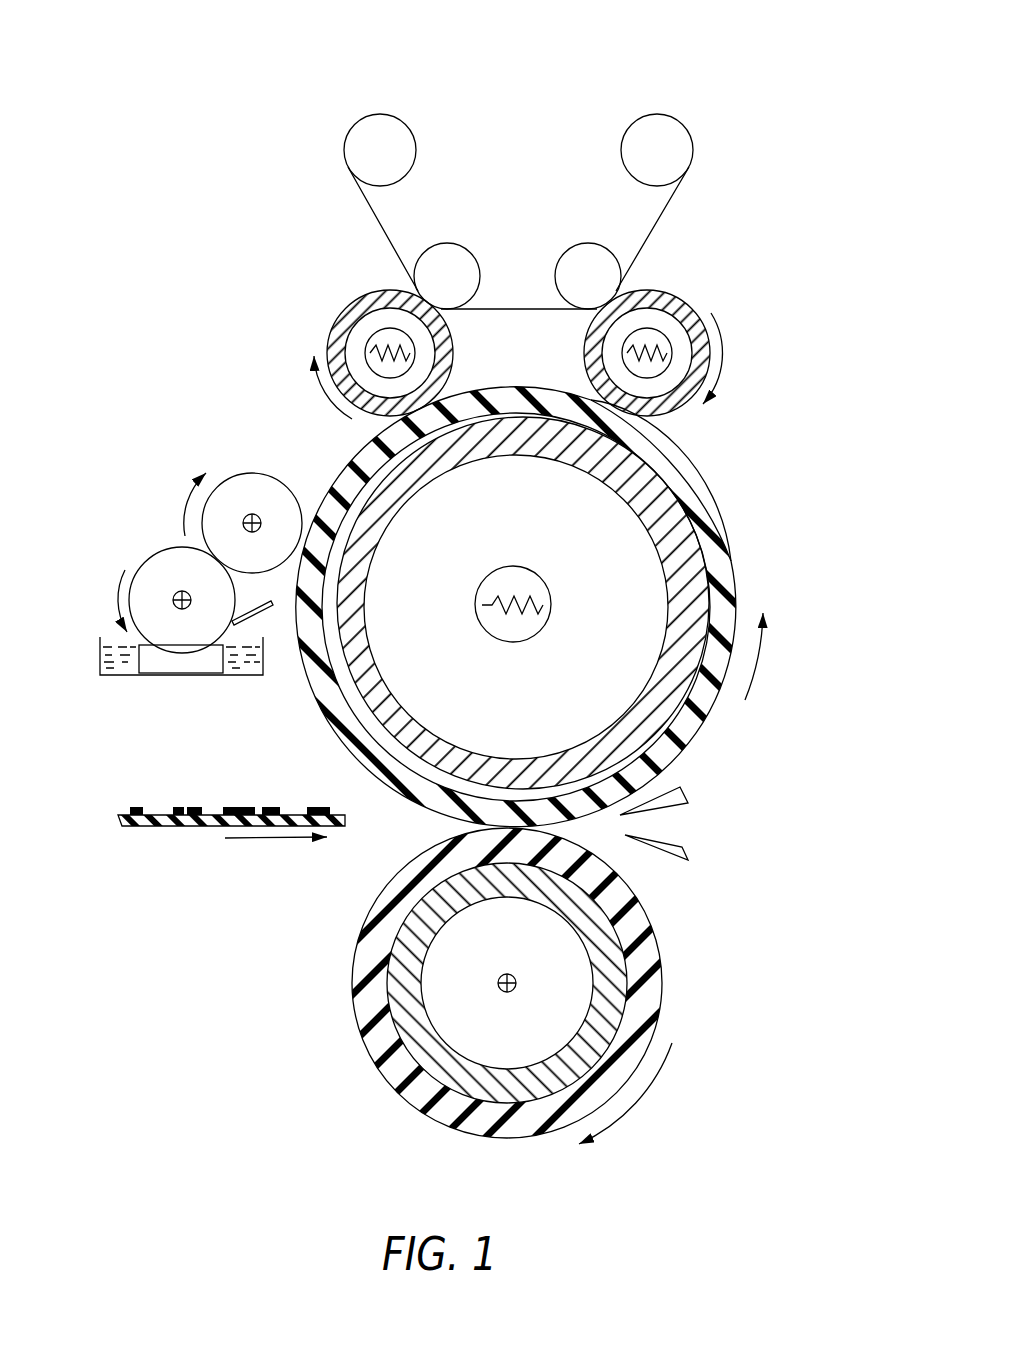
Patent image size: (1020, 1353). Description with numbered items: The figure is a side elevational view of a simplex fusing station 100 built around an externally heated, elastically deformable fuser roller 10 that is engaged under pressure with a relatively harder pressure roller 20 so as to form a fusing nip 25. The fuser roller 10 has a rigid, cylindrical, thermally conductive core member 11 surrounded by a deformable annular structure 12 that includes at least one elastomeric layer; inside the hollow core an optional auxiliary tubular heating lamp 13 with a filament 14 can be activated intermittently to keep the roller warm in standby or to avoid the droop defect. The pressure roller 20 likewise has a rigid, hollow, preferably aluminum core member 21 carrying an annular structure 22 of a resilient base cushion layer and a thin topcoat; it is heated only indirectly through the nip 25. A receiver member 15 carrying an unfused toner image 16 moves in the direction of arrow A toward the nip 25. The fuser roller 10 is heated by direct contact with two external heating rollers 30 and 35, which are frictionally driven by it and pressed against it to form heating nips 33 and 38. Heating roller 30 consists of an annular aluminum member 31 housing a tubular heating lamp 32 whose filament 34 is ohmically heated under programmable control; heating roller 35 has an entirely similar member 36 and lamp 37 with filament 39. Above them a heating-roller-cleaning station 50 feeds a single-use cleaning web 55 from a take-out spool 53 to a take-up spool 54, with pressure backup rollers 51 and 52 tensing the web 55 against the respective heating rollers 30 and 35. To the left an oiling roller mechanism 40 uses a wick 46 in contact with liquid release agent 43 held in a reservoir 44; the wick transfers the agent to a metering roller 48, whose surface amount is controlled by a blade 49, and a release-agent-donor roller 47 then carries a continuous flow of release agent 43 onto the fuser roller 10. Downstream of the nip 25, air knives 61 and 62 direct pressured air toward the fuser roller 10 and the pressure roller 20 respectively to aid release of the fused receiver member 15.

The fusing station 100 is at (208, 176).
The fuser roller 10 is at (761, 488).
The core member 11 is at (673, 575).
The deformable annular structure 12 is at (722, 555).
The tubular heating lamp 13 is at (515, 567).
The filament 14 is at (477, 601).
The receiver member 15 is at (150, 818).
The unfused toner image 16 is at (237, 807).
The pressure roller 20 is at (716, 970).
The core member 21 is at (403, 1003).
The annular structure 22 is at (413, 1085).
The fusing nip 25 is at (422, 825).
The external heating roller 30 is at (357, 280).
The annular aluminum member 31 is at (331, 340).
The tubular heating lamp 32 is at (348, 312).
The heating nip 33 is at (448, 392).
The filament 34 is at (400, 340).
The heating roller 35 is at (683, 280).
The member 36 is at (711, 340).
The lamp 37 is at (690, 308).
The heating nip 38 is at (658, 432).
The filament 39 is at (622, 366).
The oiling roller mechanism 40 is at (96, 620).
The release agent 43 is at (256, 666).
The reservoir 44 is at (100, 660).
The wick 46 is at (163, 665).
The release-agent-donor roller 47 is at (237, 478).
The metering roller 48 is at (163, 552).
The blade 49 is at (262, 618).
The heating-roller-cleaning station 50 is at (504, 56).
The pressure backup roller 51 is at (442, 252).
The pressure backup roller 52 is at (594, 252).
The take-out spool 53 is at (376, 124).
The take-up spool 54 is at (662, 122).
The cleaning web 55 is at (667, 213).
The air knife 61 is at (687, 795).
The air knife 62 is at (688, 852).
The direction of arrow A is at (263, 840).